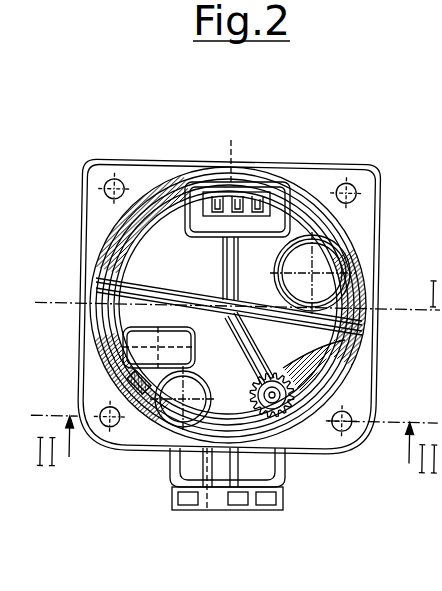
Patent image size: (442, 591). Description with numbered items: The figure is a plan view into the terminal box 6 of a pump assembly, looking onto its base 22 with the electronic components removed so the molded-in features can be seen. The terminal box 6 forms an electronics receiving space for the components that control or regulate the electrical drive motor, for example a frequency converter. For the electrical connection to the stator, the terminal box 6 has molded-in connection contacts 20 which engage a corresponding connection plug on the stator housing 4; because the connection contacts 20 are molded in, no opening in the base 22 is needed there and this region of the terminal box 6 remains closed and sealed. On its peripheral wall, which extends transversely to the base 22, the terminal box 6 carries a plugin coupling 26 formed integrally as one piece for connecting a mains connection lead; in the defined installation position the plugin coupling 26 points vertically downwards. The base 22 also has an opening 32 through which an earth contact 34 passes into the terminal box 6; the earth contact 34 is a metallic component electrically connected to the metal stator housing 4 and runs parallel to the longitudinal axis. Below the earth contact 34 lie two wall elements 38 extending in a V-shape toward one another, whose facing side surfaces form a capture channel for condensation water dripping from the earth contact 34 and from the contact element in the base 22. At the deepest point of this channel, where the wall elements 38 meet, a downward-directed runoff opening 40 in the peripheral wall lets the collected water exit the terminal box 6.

The stator housing 4 is at (374, 207).
The terminal box 6 is at (90, 219).
The connection contacts 20 is at (193, 166).
The base 22 is at (188, 277).
The plugin coupling 26 is at (193, 500).
The opening 32 is at (309, 450).
The earth contact 34 is at (357, 371).
The wall elements 38 is at (340, 428).
The runoff opening 40 is at (288, 452).